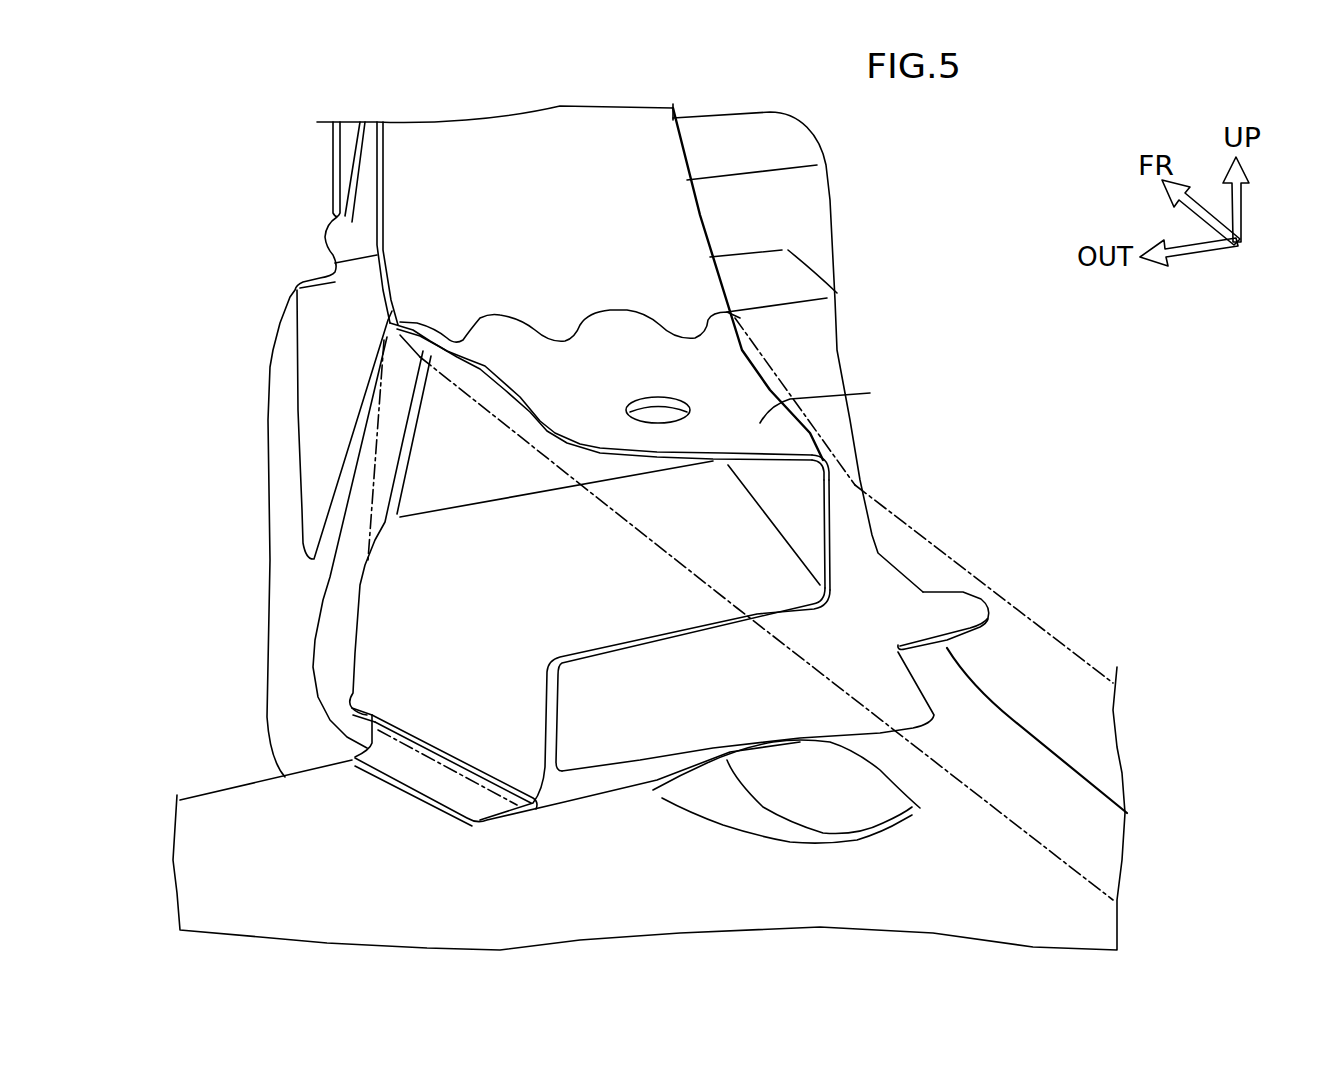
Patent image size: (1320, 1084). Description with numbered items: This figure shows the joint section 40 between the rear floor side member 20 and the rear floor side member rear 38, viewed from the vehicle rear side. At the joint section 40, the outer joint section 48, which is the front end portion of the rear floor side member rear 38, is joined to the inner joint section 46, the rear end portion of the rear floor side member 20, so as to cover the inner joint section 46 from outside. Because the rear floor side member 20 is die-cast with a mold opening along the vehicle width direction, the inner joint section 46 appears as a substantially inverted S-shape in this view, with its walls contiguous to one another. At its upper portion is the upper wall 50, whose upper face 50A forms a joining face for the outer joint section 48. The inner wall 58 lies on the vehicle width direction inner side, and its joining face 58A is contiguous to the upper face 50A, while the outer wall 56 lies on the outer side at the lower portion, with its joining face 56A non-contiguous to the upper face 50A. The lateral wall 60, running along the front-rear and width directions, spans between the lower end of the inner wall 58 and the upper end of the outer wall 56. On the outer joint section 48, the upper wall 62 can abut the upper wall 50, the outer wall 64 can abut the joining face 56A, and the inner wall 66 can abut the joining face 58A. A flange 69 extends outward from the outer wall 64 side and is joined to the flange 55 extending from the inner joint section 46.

The rear floor side member 20 is at (854, 238).
The rear floor side member rear 38 is at (1026, 591).
The joint section 40 is at (906, 468).
The inner joint section 46 is at (844, 534).
The outer joint section 48 is at (833, 432).
The upper wall 50 is at (733, 388).
The upper face 50A is at (685, 385).
The flange 55 is at (400, 763).
The outer wall 56 is at (400, 648).
The joining face 56A is at (270, 547).
The inner wall 58 is at (835, 560).
The joining face 58A is at (912, 601).
The lateral wall 60 is at (681, 634).
The upper wall 62 is at (770, 402).
The outer wall 64 is at (453, 727).
The inner wall 66 is at (923, 533).
The flange 69 is at (484, 812).